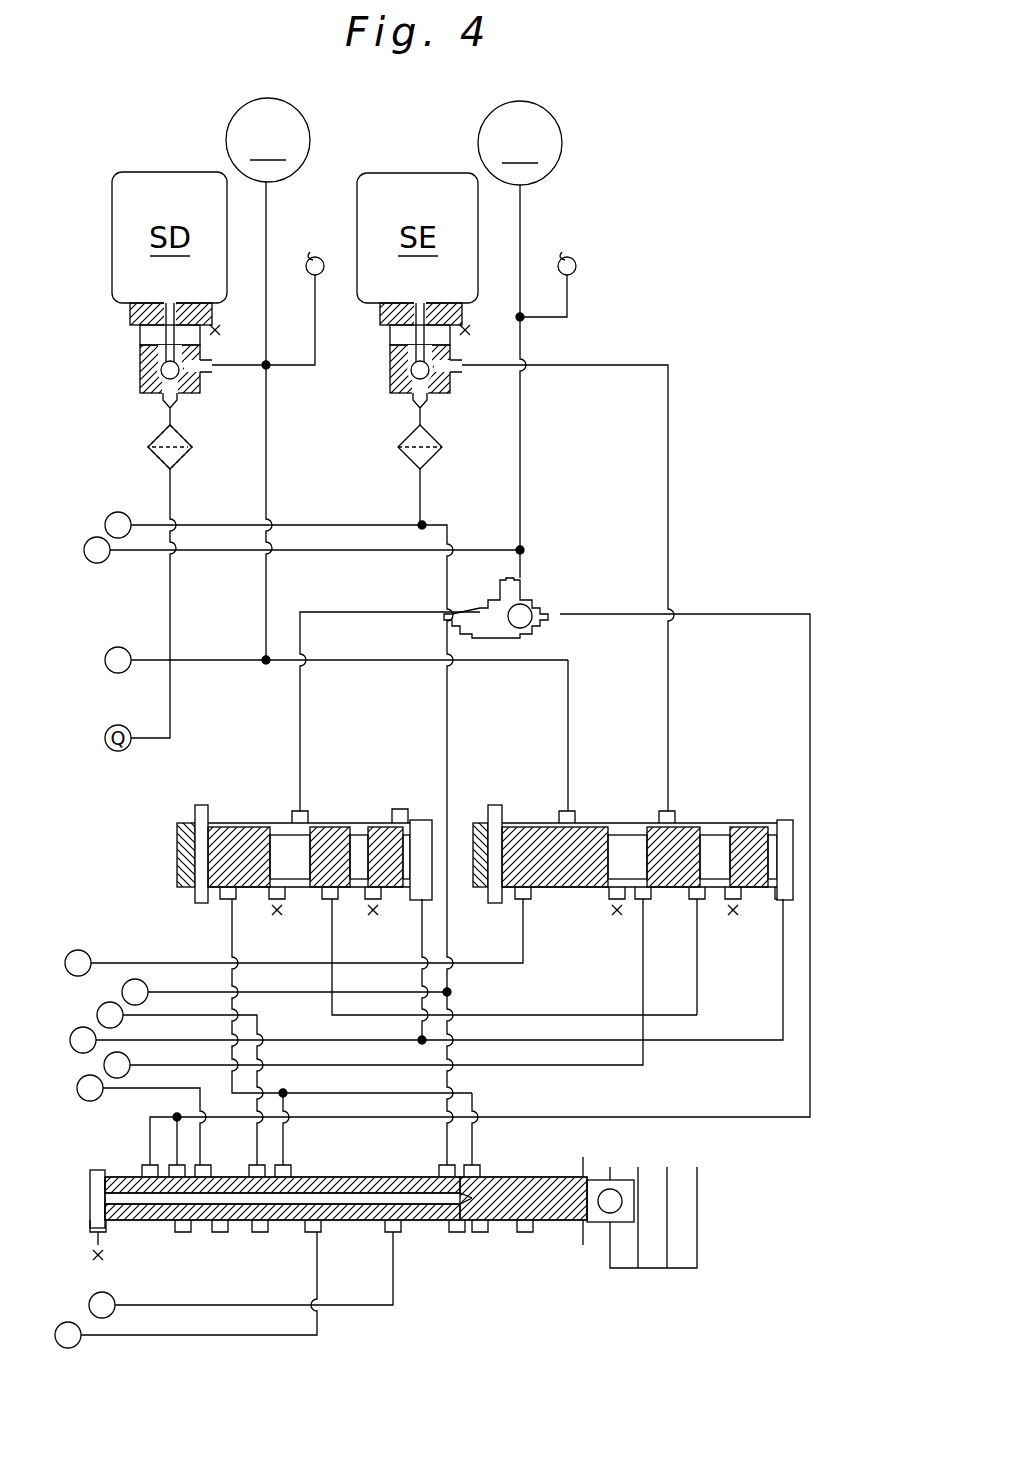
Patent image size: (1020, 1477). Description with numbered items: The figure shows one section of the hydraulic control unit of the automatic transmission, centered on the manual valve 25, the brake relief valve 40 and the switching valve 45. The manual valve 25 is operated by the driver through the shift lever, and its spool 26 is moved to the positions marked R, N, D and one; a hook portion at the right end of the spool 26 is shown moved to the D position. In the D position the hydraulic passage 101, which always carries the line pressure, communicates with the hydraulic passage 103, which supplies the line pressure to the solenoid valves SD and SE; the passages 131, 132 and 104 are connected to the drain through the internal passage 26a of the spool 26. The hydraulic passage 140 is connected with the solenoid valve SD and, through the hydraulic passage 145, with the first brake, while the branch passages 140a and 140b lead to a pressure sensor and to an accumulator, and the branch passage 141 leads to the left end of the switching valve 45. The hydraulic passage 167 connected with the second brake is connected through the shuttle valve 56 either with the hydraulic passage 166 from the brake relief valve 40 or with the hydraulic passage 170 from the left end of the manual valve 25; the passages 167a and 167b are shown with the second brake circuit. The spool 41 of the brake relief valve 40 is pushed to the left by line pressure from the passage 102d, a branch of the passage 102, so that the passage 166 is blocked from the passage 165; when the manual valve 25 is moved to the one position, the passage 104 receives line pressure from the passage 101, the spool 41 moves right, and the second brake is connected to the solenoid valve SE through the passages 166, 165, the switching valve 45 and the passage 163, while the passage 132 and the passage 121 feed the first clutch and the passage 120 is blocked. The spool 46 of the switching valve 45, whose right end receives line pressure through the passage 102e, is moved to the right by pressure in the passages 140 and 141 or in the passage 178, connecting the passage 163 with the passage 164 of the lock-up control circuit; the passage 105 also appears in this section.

The hydraulic passage 145 is at (268, 215).
The hydraulic passage 167 is at (520, 215).
The hydraulic passage 140a is at (296, 367).
The oil passage 167a is at (552, 319).
The hydraulic passage 103 is at (212, 525).
The hydraulic passage 140 is at (268, 493).
The hydraulic passage 163 is at (668, 497).
The oil passage 167b is at (297, 552).
The hydraulic passage 166 is at (395, 612).
The shuttle valve 56 is at (548, 595).
The hydraulic passage 170 is at (696, 614).
The hydraulic passage 140b is at (205, 662).
The hydraulic passage 141 is at (569, 720).
The brake relief valve 40 is at (304, 824).
The spool 41 is at (400, 821).
The switching valve 45 is at (633, 808).
The spool 46 is at (760, 822).
The hydraulic passage 178 is at (125, 962).
The oil passage 105 is at (190, 992).
The hydraulic passage 102d is at (418, 915).
The hydraulic passage 102e is at (783, 972).
The hydraulic passage 121 is at (257, 1022).
The hydraulic passage 102 is at (520, 1015).
The hydraulic passage 165 is at (697, 978).
The hydraulic passage 164 is at (505, 1070).
The hydraulic passage 120 is at (122, 1093).
The hydraulic passage 132 is at (283, 1140).
The hydraulic passage 104 is at (472, 1140).
The spool 26 is at (362, 1222).
The internal passage 26a is at (226, 1225).
The hydraulic passage 101 is at (394, 1265).
The hydraulic passage 131 is at (318, 1331).
The manual valve 25 is at (554, 1284).